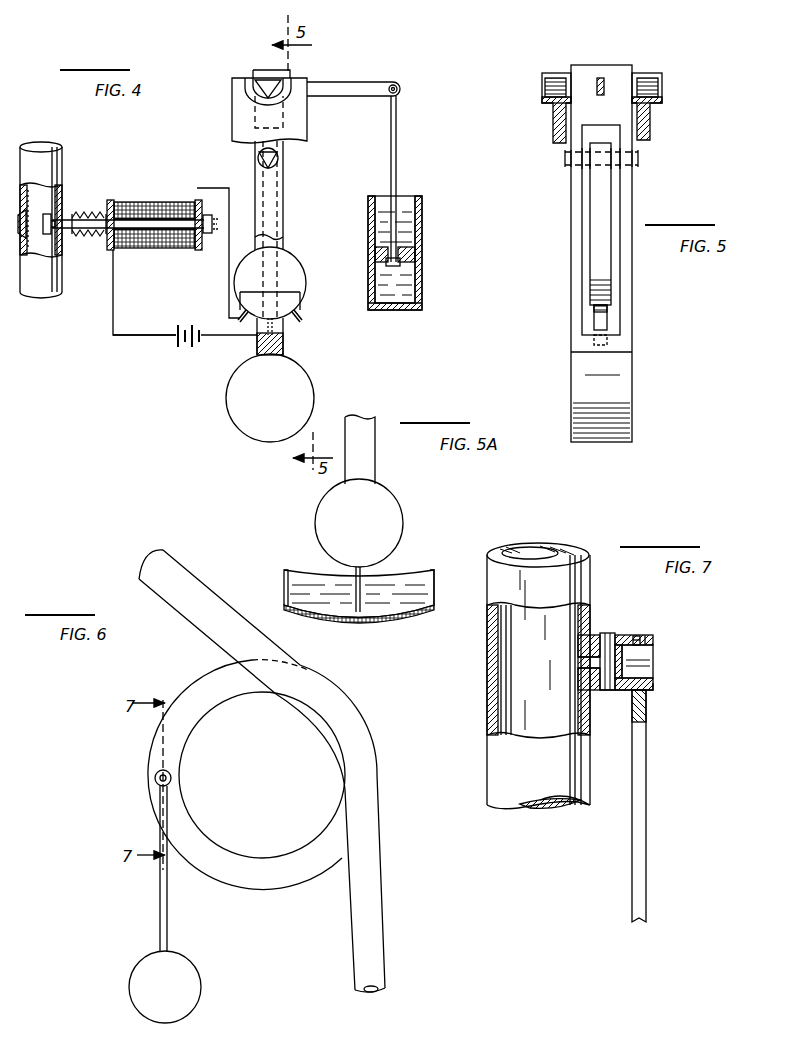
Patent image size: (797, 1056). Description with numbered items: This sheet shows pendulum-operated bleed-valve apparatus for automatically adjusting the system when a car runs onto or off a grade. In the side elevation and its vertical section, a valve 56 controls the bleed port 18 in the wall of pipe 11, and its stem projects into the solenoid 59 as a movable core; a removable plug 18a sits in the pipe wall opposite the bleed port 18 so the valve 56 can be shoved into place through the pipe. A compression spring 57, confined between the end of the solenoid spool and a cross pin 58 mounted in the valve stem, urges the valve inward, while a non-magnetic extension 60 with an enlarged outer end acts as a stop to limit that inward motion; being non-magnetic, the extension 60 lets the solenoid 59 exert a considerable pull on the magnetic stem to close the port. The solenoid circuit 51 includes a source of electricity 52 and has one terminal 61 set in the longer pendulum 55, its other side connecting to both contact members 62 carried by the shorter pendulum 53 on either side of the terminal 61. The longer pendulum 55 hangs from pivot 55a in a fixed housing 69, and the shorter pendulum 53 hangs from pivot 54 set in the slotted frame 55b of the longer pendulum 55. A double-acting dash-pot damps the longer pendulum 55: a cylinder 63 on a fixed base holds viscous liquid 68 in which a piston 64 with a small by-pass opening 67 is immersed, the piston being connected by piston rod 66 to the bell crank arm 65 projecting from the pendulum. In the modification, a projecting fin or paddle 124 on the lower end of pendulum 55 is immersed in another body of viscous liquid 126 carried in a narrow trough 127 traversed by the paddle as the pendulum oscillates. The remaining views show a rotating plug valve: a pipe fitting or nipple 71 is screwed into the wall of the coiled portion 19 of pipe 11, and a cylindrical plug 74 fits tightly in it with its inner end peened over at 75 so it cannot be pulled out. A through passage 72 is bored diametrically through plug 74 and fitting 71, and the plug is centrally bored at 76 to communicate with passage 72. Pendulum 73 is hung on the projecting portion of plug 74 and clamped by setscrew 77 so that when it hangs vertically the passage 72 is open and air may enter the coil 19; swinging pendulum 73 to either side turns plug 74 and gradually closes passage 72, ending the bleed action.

In FIG. 4, the pipe 11 is at (55, 164).
In FIG. 4, the bleed port 18 is at (62, 218).
In FIG. 4, the removable plug 18a is at (18, 220).
In FIG. 6, the coiled portion of pipe 19 is at (186, 696).
In FIG. 7, the coiled portion of pipe 19 is at (556, 562).
In FIG. 4, the solenoid circuit 51 is at (215, 336).
In FIG. 4, the source of electricity 52 is at (176, 340).
In FIG. 4, the shorter pendulum 53 is at (286, 267).
In FIG. 5, the shorter pendulum 53 is at (600, 267).
In FIG. 4, the pivot 54 is at (279, 160).
In FIG. 5, the pivot 54 is at (638, 161).
In FIG. 4, the longer pendulum 55 is at (285, 190).
In FIG. 5, the longer pendulum 55 is at (632, 427).
In FIG. 5A, the longer pendulum 55 is at (388, 507).
In FIG. 4, the pivot 55a is at (275, 85).
In FIG. 5, the pivot 55a is at (657, 83).
In FIG. 5, the slotted frame 55b is at (618, 195).
In FIG. 4, the valve 56 is at (43, 215).
In FIG. 4, the compression spring 57 is at (90, 212).
In FIG. 4, the cross pin 58 is at (76, 232).
In FIG. 4, the solenoid 59 is at (155, 200).
In FIG. 4, the non-magnetic extension 60 is at (207, 235).
In FIG. 4, the terminal 61 is at (285, 341).
In FIG. 4, the contact members 62 is at (240, 320).
In FIG. 4, the cylinder 63 is at (422, 206).
In FIG. 4, the piston 64 is at (412, 248).
In FIG. 4, the bell crank arm 65 is at (378, 80).
In FIG. 5, the bell crank arm 65 is at (603, 84).
In FIG. 4, the piston rod 66 is at (400, 112).
In FIG. 6, the piston rod 66 is at (195, 583).
In FIG. 4, the by-pass opening 67 is at (368, 272).
In FIG. 4, the viscous liquid 68 is at (375, 222).
In FIG. 4, the fixed housing 69 is at (232, 98).
In FIG. 5, the fixed housing 69 is at (650, 122).
In FIG. 7, the pipe fitting 71 is at (596, 634).
In FIG. 7, the through passage 72 is at (615, 637).
In FIG. 6, the pendulum 73 is at (188, 982).
In FIG. 7, the pendulum 73 is at (646, 790).
In FIG. 6, the cylindrical plug 74 is at (155, 776).
In FIG. 7, the cylindrical plug 74 is at (653, 668).
In FIG. 7, the peened inner end 75 is at (578, 649).
In FIG. 7, the central bore 76 is at (640, 636).
In FIG. 7, the setscrew 77 is at (647, 636).
In FIG. 5A, the paddle 124 is at (363, 581).
In FIG. 5A, the viscous liquid 126 is at (405, 600).
In FIG. 5A, the trough 127 is at (434, 572).